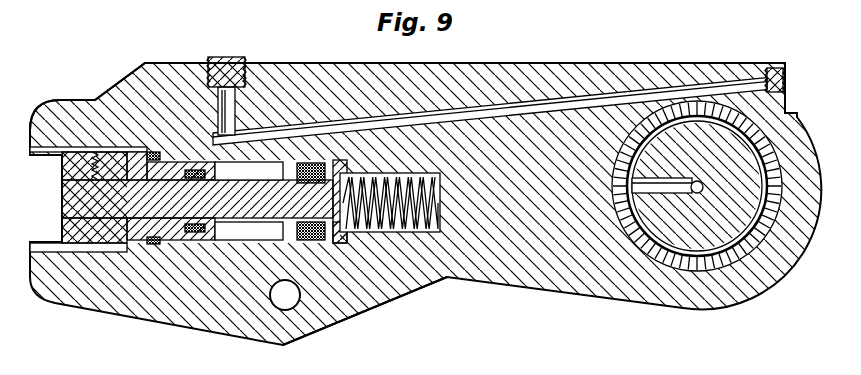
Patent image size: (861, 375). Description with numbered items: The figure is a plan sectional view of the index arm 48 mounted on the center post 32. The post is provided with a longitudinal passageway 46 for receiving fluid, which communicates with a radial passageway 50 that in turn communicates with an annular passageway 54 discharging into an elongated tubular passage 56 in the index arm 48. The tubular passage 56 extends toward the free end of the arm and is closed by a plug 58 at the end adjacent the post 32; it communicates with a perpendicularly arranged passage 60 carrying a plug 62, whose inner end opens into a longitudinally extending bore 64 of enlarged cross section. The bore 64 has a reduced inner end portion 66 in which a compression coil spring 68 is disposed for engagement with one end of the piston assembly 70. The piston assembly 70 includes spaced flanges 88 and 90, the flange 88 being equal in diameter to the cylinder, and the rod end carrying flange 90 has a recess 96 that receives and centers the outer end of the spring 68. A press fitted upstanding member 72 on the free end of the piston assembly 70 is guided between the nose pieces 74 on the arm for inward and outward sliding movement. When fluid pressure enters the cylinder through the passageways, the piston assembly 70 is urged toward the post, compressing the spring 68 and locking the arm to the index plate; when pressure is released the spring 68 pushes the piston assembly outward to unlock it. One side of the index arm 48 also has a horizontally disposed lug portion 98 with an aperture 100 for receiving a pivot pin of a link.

The center post 32 is at (695, 233).
The longitudinal passageway 46 is at (703, 187).
The index arm 48 is at (520, 255).
The radial passageway 50 is at (665, 193).
The annular passageway 54 is at (758, 218).
The elongated tubular passage 56 is at (637, 90).
The plug 58 is at (775, 68).
The perpendicularly arranged passage 60 is at (212, 88).
The plug 62 is at (237, 57).
The longitudinally extending bore 64 is at (238, 232).
The reduced inner end portion 66 is at (405, 230).
The compression coil spring 68 is at (430, 232).
The piston assembly 70 is at (178, 204).
The upstanding member 72 is at (77, 230).
The nose pieces 74 is at (50, 115).
The flange 88 is at (290, 165).
The flange 90 is at (335, 165).
The recess 96 is at (345, 232).
The lug portion 98 is at (355, 303).
The aperture 100 is at (297, 300).